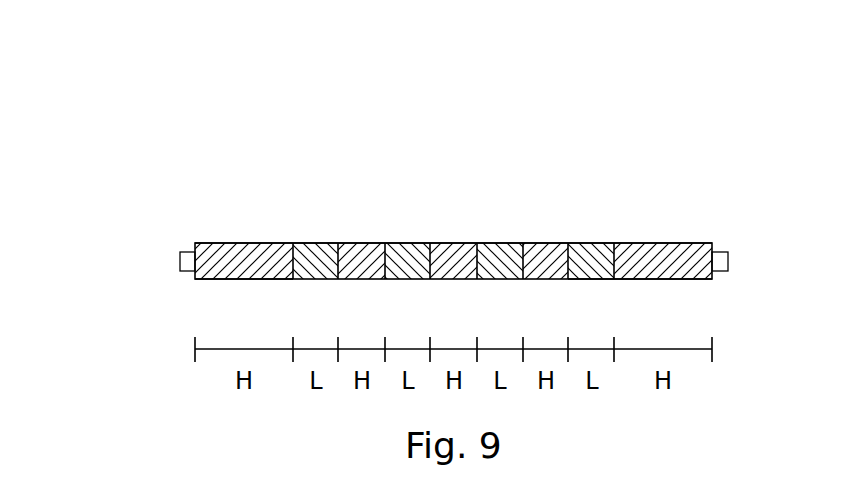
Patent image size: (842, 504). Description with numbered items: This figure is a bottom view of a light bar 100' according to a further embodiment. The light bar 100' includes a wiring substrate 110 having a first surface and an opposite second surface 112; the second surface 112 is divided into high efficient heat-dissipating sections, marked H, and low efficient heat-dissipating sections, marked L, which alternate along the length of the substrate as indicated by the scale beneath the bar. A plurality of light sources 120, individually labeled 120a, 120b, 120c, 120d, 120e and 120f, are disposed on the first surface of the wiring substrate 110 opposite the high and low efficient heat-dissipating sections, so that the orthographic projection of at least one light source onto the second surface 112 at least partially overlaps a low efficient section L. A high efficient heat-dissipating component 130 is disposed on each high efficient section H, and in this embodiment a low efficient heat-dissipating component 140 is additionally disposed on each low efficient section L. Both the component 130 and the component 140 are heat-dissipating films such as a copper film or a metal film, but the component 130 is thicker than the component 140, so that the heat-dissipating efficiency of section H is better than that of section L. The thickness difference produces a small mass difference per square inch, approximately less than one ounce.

The light bar 100' is at (398, 169).
The wiring substrate 110 is at (180, 262).
The second surface 112 is at (197, 243).
The light sources 120 is at (760, 122).
The light source 120a is at (238, 243).
The light source 120b is at (333, 243).
The light source 120c is at (425, 243).
The light source 120d is at (517, 243).
The light source 120e is at (608, 243).
The light source 120f is at (702, 243).
The high efficient heat-dissipating component 130 is at (258, 279).
The low efficient heat-dissipating component 140 is at (592, 279).